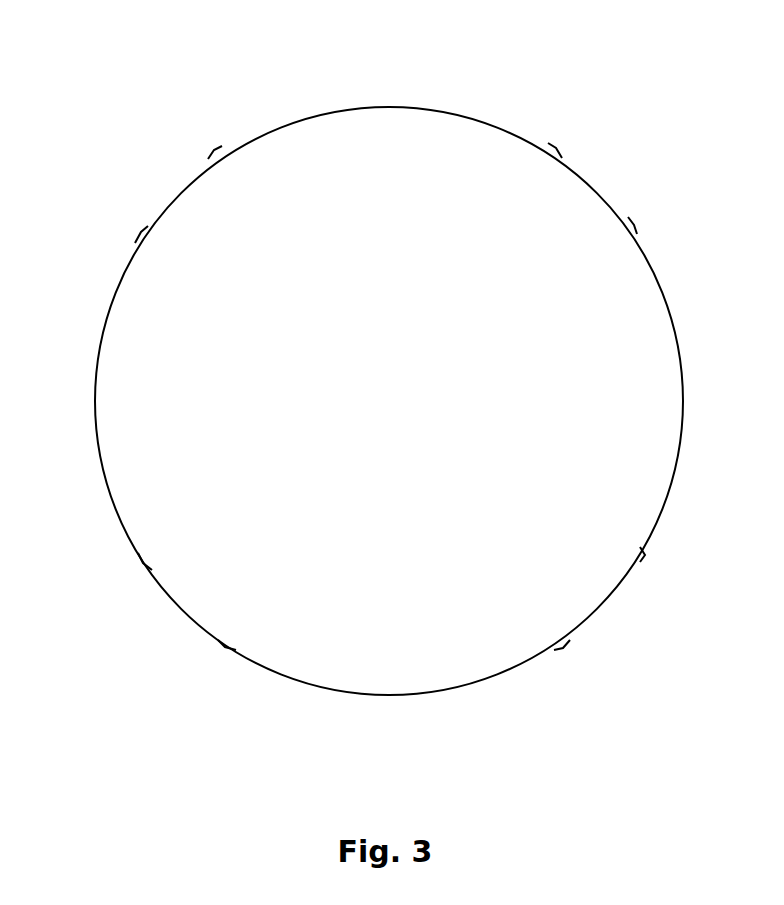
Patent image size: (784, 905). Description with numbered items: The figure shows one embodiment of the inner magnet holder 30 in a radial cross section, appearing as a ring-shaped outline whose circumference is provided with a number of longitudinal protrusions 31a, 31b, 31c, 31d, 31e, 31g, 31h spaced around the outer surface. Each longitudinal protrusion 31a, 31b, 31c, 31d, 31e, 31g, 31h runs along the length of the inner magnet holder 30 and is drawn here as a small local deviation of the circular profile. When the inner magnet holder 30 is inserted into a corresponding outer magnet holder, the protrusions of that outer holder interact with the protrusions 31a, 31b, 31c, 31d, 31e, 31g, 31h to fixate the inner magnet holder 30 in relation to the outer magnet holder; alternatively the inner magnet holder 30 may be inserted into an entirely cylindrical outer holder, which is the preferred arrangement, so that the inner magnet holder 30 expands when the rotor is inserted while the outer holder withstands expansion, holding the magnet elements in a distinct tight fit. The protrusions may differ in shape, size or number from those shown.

The inner magnet holder 30 is at (450, 115).
The longitudinal protrusion 31a is at (557, 148).
The longitudinal protrusion 31b is at (635, 225).
The longitudinal protrusion 31c is at (645, 555).
The longitudinal protrusion 31d is at (563, 648).
The longitudinal protrusion 31e is at (143, 563).
The longitudinal protrusion 31g is at (140, 237).
The longitudinal protrusion 31h is at (217, 153).